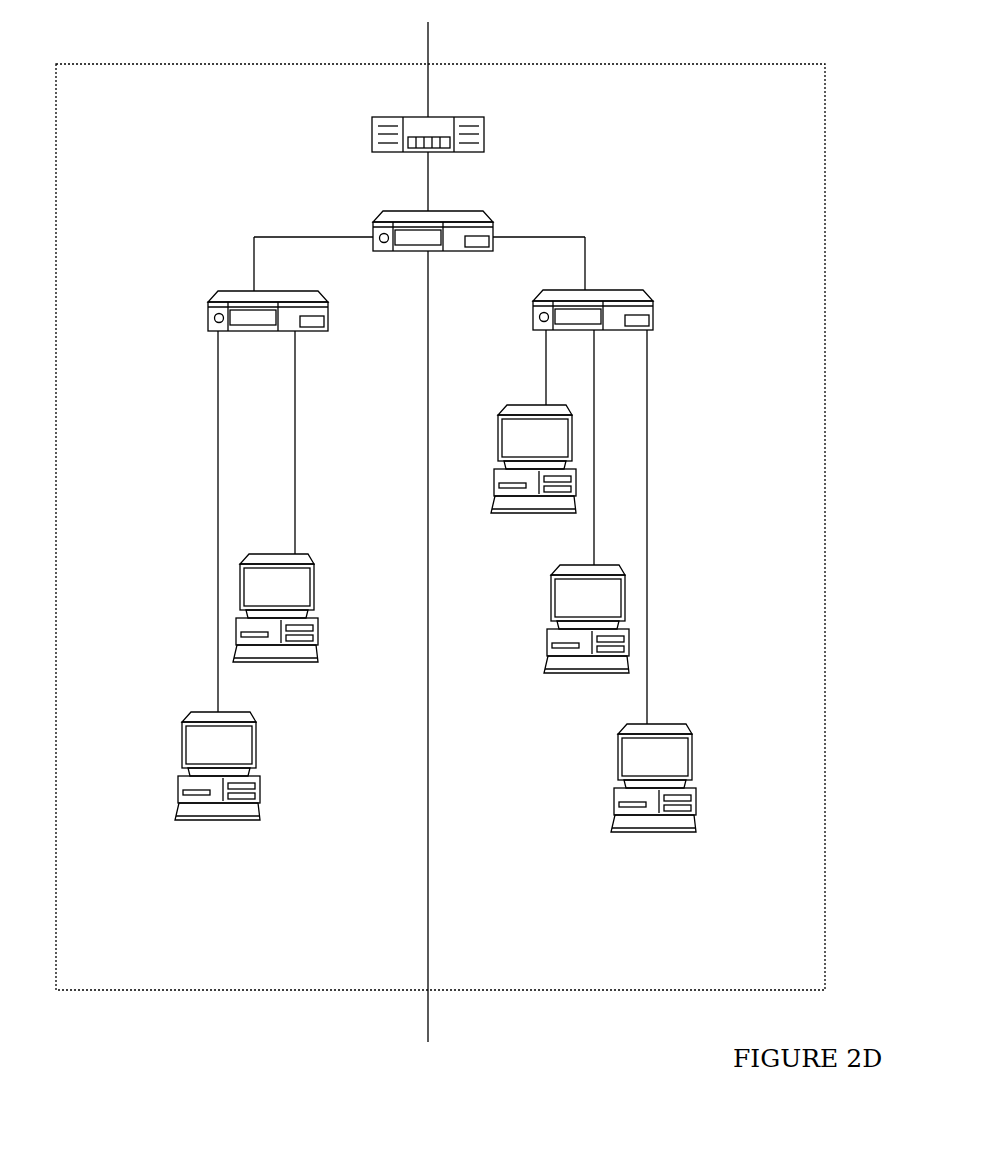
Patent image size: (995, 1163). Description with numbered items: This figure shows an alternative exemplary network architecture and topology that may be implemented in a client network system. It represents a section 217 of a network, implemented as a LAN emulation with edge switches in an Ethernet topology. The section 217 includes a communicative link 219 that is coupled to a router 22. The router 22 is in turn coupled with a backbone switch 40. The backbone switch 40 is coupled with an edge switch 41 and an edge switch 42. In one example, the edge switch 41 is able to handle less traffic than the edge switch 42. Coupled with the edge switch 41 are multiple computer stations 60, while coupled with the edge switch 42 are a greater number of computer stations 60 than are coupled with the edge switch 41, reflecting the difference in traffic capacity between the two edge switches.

The section 217 is at (201, 63).
The communicative link 219 is at (428, 51).
The router 22 is at (428, 134).
The backbone switch 40 is at (419, 251).
The edge switch 41 is at (268, 311).
The edge switch 42 is at (593, 310).
The computer stations 60 is at (435, 581).